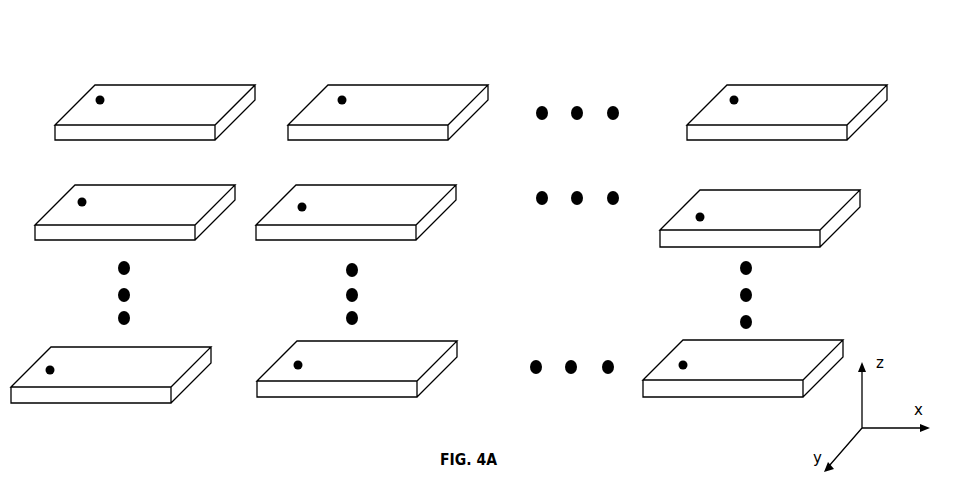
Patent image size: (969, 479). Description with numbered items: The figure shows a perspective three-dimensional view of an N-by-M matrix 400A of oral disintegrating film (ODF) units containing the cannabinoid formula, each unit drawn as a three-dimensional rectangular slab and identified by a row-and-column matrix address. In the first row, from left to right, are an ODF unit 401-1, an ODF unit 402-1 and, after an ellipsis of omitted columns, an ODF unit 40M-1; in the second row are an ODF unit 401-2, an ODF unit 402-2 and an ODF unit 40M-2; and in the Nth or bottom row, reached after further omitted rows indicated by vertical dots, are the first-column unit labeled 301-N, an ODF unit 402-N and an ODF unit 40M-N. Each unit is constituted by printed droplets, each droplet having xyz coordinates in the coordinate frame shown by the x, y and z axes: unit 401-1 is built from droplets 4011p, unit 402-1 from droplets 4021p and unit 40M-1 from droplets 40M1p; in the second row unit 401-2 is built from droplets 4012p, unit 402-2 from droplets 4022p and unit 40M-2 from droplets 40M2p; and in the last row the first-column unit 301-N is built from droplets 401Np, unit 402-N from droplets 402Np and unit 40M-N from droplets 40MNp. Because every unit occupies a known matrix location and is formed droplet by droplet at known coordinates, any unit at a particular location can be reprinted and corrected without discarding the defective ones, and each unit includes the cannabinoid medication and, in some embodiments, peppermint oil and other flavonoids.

The N×M matrix 400A is at (604, 48).
The ODF unit 401-1 is at (178, 85).
The ODF unit 401-2 is at (205, 184).
The sensing element (column 1, layer N) 301-N is at (143, 347).
The droplets 4011p is at (100, 96).
The droplets 4012p is at (82, 202).
The droplets 401Np is at (48, 365).
The ODF unit 402-1 is at (400, 85).
The ODF unit 402-2 is at (440, 184).
The ODF unit 402-N is at (400, 341).
The droplets 4021p is at (342, 96).
The droplets 4022p is at (302, 207).
The droplets 402Np is at (296, 362).
The ODF unit 40M-1 is at (788, 85).
The ODF unit 40M-2 is at (837, 191).
The ODF unit 40M-N is at (813, 340).
The droplets 40M1p is at (734, 96).
The position point of element 40M-2 40M2p is at (699, 213).
The droplets 40MNp is at (682, 362).